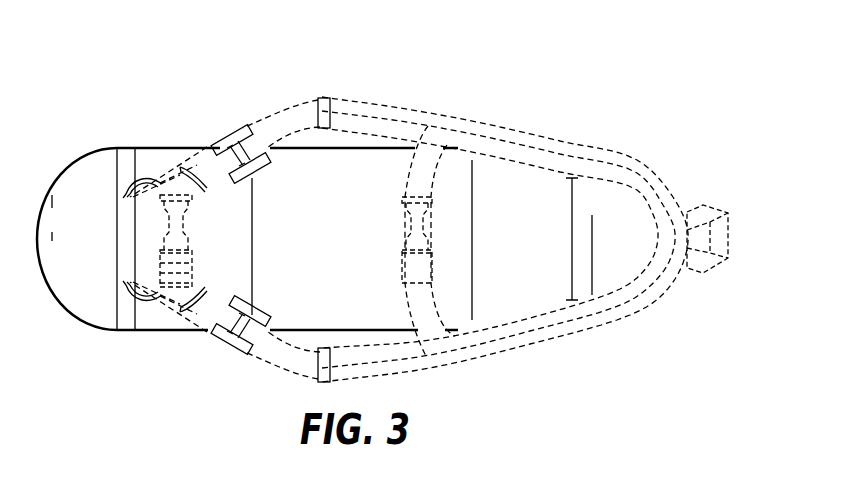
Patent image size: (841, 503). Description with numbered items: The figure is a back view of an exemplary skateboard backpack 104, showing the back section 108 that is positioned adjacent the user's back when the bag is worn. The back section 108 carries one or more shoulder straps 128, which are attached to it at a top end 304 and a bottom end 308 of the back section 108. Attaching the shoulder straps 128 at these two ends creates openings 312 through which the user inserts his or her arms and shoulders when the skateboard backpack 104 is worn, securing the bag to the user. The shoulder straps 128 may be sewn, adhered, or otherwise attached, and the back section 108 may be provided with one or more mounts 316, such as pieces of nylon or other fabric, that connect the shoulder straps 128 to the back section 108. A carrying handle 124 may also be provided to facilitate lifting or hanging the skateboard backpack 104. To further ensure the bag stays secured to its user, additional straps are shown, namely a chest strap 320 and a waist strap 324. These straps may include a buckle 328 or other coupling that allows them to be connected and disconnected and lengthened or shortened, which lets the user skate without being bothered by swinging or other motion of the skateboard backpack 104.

The skateboard backpack 104 is at (552, 85).
The back section 108 is at (150, 147).
The carrying handle 124 is at (704, 206).
The shoulder straps 128 is at (432, 110).
The top end 304 is at (672, 168).
The bottom end 308 is at (73, 336).
The openings 312 is at (333, 125).
The mounts 316 is at (201, 186).
The chest strap 320 is at (434, 312).
The waist strap 324 is at (163, 192).
The buckle 328 is at (192, 238).